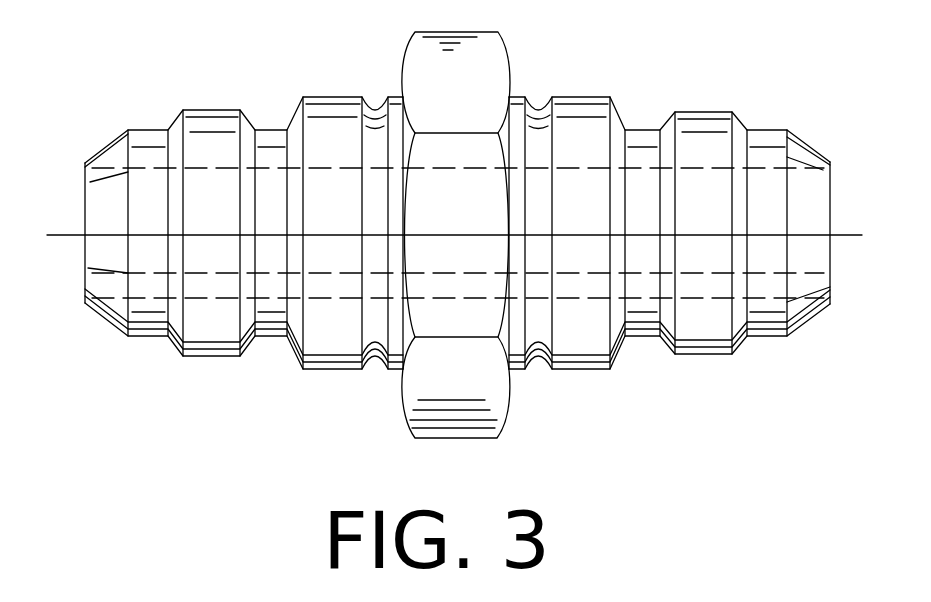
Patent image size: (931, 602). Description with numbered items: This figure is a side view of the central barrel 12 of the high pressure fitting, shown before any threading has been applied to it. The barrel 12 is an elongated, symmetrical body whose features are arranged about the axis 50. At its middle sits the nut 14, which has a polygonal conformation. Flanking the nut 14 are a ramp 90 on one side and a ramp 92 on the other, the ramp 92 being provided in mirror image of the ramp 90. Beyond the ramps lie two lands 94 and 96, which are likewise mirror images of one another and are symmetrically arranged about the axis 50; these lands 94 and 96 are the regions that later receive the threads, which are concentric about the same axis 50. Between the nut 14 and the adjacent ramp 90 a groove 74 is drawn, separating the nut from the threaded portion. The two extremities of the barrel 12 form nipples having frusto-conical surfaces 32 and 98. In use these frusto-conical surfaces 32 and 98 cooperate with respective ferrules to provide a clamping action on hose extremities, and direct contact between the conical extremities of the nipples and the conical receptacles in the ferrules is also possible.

The central barrel 12 is at (521, 72).
The nut 14 is at (435, 31).
The frusto-conical surface 32 is at (105, 318).
The axis 50 is at (60, 235).
The annular groove 74 is at (372, 107).
The ramp 90 is at (331, 70).
The ramp 92 is at (573, 97).
The land 94 is at (226, 86).
The land 96 is at (717, 87).
The frusto-conical surface 98 is at (807, 321).